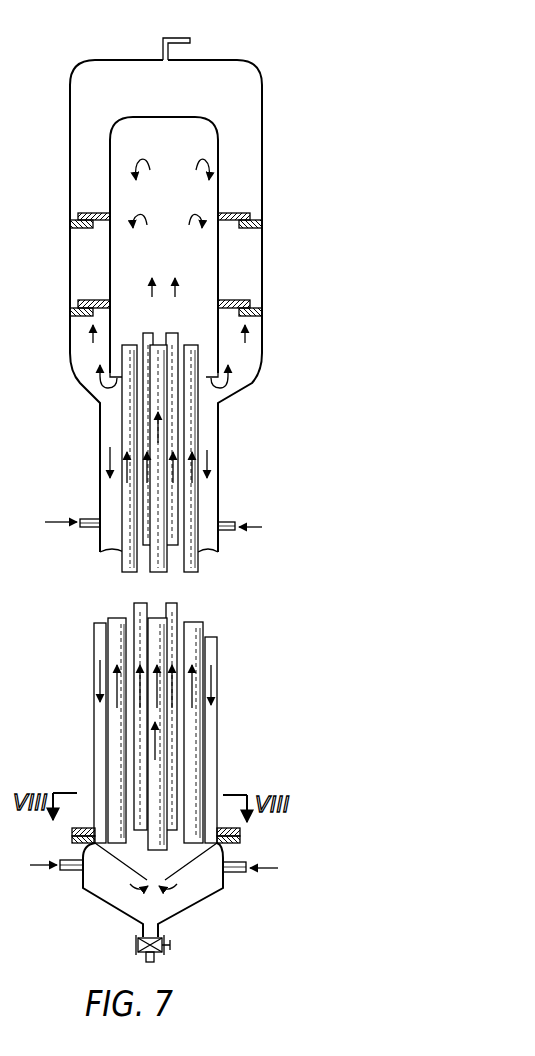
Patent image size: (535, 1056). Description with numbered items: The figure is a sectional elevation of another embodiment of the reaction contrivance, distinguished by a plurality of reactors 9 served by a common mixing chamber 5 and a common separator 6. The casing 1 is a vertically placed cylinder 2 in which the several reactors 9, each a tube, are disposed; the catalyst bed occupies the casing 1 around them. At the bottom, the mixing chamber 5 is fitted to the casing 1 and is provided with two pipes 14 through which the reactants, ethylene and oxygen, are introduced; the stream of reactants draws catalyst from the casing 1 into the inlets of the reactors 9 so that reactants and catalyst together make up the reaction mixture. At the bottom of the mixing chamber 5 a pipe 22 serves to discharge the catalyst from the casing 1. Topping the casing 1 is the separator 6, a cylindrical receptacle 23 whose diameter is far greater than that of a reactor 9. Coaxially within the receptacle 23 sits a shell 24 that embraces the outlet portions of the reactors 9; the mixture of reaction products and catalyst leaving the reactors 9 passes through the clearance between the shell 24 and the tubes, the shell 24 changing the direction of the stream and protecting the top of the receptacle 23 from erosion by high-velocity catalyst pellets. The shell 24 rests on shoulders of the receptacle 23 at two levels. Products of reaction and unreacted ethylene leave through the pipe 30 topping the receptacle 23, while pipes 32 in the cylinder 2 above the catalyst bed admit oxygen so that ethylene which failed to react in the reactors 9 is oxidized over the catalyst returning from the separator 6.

The casing 1 is at (221, 660).
The cylinder 2 is at (220, 434).
The mixing chamber 5 is at (194, 913).
The separator 6 is at (264, 166).
The reactor 9 is at (197, 500).
The pipes 14 is at (66, 873).
The pipe 22 is at (153, 930).
The cylindrical receptacle 23 is at (263, 280).
The shell 24 is at (219, 270).
The pipe 30 is at (192, 41).
The pipes 32 is at (83, 519).